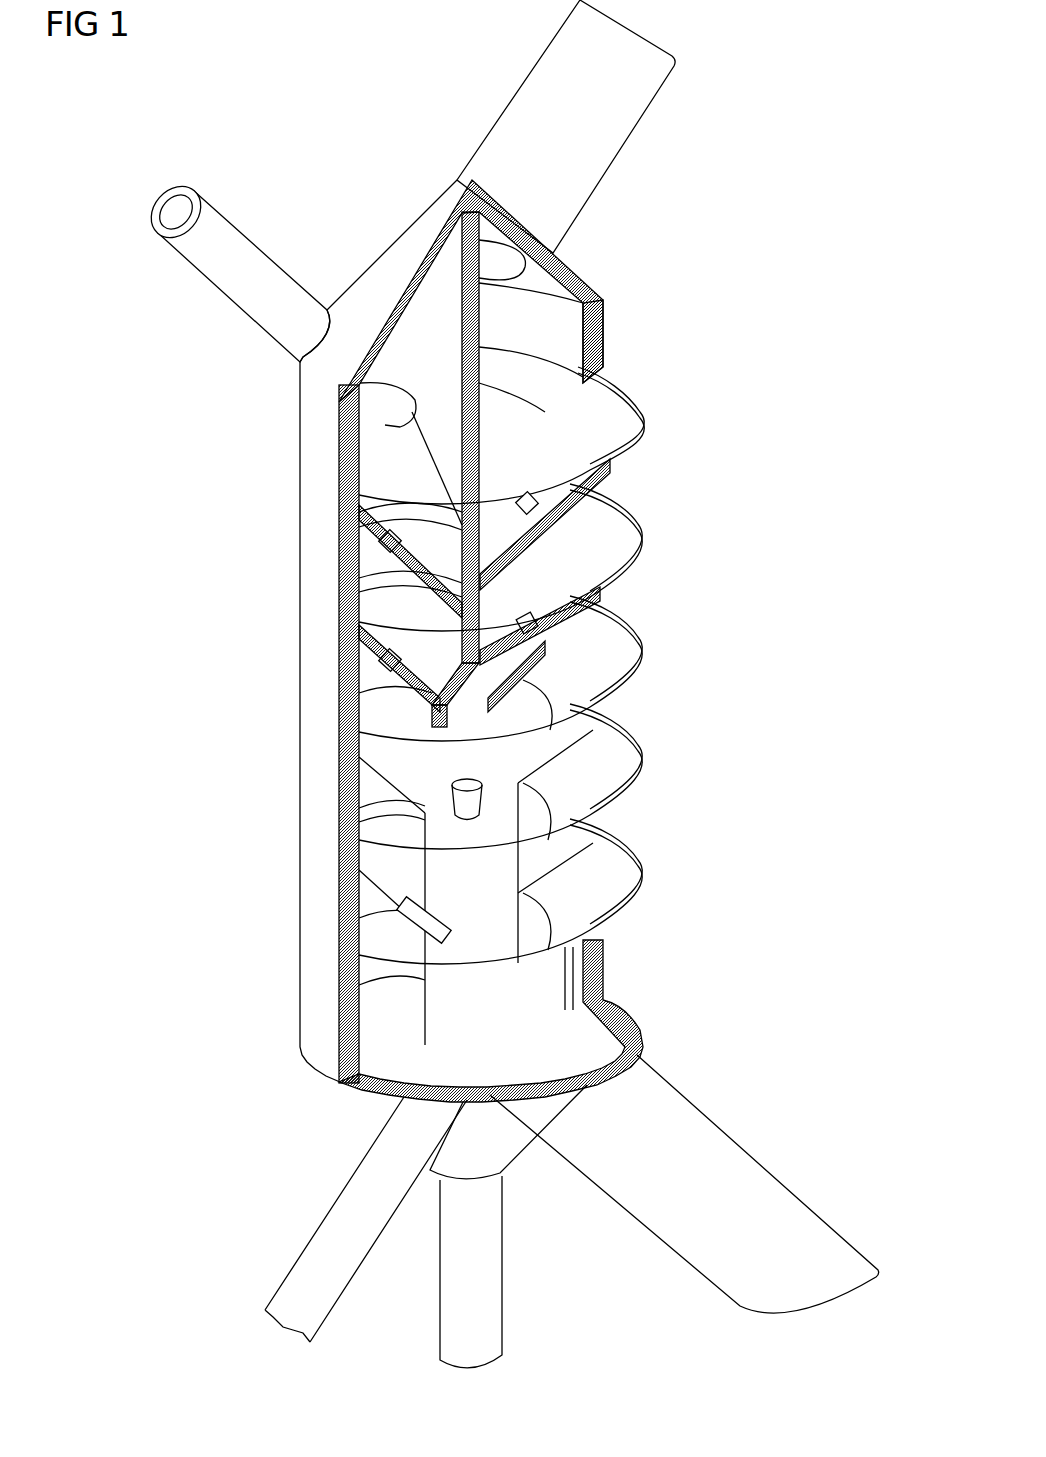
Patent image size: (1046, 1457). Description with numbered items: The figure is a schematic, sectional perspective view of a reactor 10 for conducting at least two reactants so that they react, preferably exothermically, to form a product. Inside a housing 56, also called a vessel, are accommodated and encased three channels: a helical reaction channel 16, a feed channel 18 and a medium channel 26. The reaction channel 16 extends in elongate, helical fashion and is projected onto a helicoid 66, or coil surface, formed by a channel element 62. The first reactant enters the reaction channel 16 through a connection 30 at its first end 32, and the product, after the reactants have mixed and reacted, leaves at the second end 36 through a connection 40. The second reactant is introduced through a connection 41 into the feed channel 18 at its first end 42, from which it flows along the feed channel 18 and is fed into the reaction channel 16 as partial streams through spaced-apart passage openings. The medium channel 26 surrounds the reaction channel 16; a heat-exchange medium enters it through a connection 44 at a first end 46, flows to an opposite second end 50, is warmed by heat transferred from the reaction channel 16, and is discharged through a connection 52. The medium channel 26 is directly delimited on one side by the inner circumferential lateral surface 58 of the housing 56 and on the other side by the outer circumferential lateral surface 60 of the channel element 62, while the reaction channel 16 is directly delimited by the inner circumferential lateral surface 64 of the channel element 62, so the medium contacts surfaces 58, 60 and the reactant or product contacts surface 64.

The reactor 10 is at (320, 103).
The reaction channel 16 is at (522, 500).
The feed channel 18 is at (470, 720).
The medium channel 26 is at (553, 327).
The connection 30 is at (333, 1235).
The first end 32 is at (524, 1040).
The second end 36 is at (323, 301).
The connection 40 is at (225, 277).
The connection 41 is at (487, 1297).
The first end 42 is at (506, 1179).
The connection 44 is at (752, 1175).
The first end 46 is at (626, 1011).
The second end 50 is at (555, 278).
The connection 52 is at (644, 91).
The housing 56 is at (300, 690).
The inner circumferential lateral surface 58 is at (605, 343).
The outer circumferential lateral surface 60 is at (612, 452).
The channel element 62 is at (640, 427).
The inner circumferential lateral surface 64 is at (573, 617).
The helicoid 66 is at (633, 523).